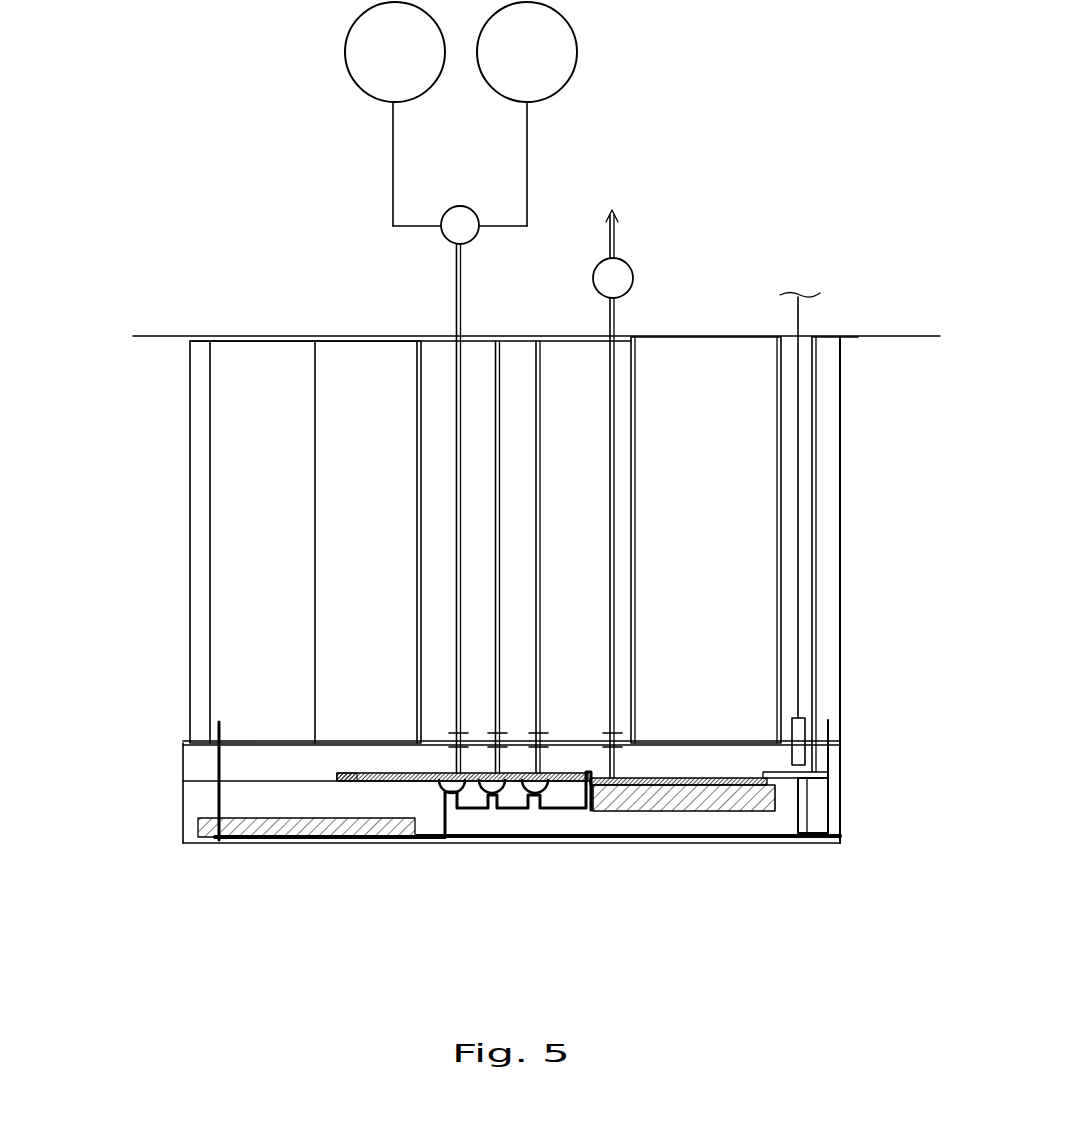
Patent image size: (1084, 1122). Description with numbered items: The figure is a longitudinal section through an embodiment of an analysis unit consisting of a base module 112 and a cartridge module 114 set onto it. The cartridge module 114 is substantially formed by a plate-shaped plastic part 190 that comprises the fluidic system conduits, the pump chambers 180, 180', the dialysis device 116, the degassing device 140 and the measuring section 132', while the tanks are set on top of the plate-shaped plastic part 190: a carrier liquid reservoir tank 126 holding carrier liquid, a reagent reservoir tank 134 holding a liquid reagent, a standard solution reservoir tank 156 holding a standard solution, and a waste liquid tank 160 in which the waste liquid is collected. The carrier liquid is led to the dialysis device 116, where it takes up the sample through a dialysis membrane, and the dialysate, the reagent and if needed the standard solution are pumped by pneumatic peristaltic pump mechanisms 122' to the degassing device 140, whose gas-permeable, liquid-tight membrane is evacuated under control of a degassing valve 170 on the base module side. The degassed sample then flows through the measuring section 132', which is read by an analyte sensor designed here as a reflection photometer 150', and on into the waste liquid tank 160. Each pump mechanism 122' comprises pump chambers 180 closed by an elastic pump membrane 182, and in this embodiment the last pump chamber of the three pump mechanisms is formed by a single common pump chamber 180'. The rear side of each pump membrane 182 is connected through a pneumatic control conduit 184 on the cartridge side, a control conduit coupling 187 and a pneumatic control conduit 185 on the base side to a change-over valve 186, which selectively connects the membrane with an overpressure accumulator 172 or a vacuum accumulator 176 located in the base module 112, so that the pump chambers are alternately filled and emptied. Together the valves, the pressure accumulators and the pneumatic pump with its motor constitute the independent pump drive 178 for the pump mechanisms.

The base module 112 is at (155, 181).
The cartridge module 114 is at (145, 477).
The dialysis device 116 is at (298, 850).
The pump mechanism 122' is at (602, 719).
The carrier liquid reservoir tank 126 is at (232, 562).
The measuring section 132' is at (874, 810).
The reagent reservoir tank 134 is at (352, 660).
The degassing device 140 is at (698, 832).
The reflection photometer 150' is at (867, 711).
The standard solution reservoir tank 156 is at (200, 400).
The waste liquid tank 160 is at (762, 502).
The degassing valve 170 is at (630, 265).
The overpressure accumulator 172 is at (578, 58).
The vacuum accumulator 176 is at (345, 60).
The pump drive 178 is at (562, 808).
The pump chamber 180 is at (430, 844).
The common pump chamber 180' is at (494, 846).
The pump membrane 182 is at (352, 771).
The pneumatic control conduit 184 is at (452, 771).
The pneumatic control conduit 185 is at (455, 306).
The change-over valve 186 is at (476, 213).
The control conduit coupling 187 is at (450, 722).
The plate-shaped plastic part 190 is at (192, 806).